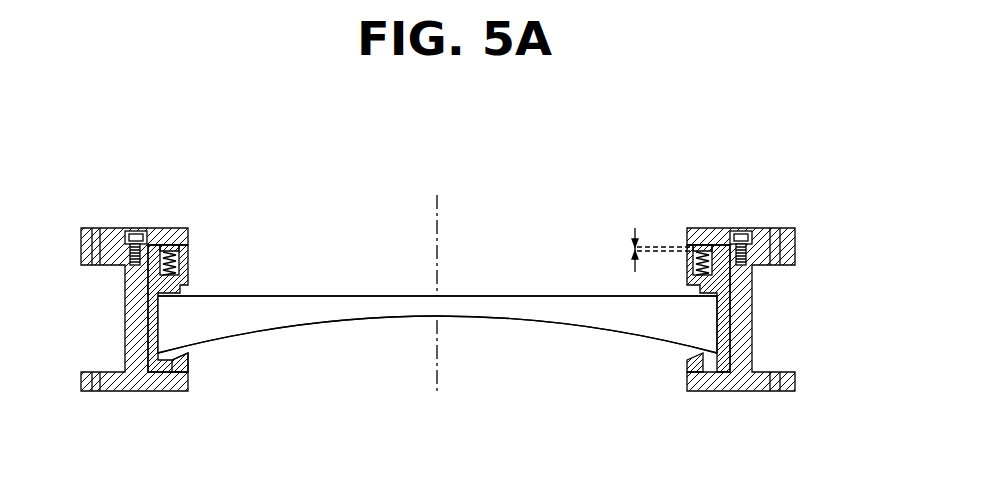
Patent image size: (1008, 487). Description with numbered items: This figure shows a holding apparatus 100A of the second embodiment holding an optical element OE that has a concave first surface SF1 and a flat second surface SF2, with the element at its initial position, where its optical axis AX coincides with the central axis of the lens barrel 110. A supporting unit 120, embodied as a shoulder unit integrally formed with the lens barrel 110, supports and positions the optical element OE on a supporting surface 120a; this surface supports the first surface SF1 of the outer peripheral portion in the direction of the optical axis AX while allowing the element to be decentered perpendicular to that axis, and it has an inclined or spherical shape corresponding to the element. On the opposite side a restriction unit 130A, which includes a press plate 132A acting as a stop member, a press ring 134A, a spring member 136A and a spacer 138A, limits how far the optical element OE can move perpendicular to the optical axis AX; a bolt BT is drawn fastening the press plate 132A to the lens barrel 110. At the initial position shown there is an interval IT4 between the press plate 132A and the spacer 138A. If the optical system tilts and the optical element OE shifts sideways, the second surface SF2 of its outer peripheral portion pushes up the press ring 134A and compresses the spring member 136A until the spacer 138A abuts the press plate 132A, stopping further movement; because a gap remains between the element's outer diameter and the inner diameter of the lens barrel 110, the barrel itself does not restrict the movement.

The holding apparatus 100A is at (421, 153).
The lens barrel 110 is at (125, 314).
The supporting unit 120 is at (148, 380).
The supporting surface 120a is at (185, 362).
The restriction unit 130A is at (718, 271).
The press plate 132A is at (700, 228).
The press ring 134A is at (722, 283).
The spring member 136A is at (727, 274).
The spacer 138A is at (690, 246).
The bolt BT is at (745, 230).
The interval IT4 is at (633, 249).
The first surface SF1 is at (285, 332).
The second surface SF2 is at (343, 294).
The optical element OE is at (484, 294).
The optical axis AX is at (440, 374).